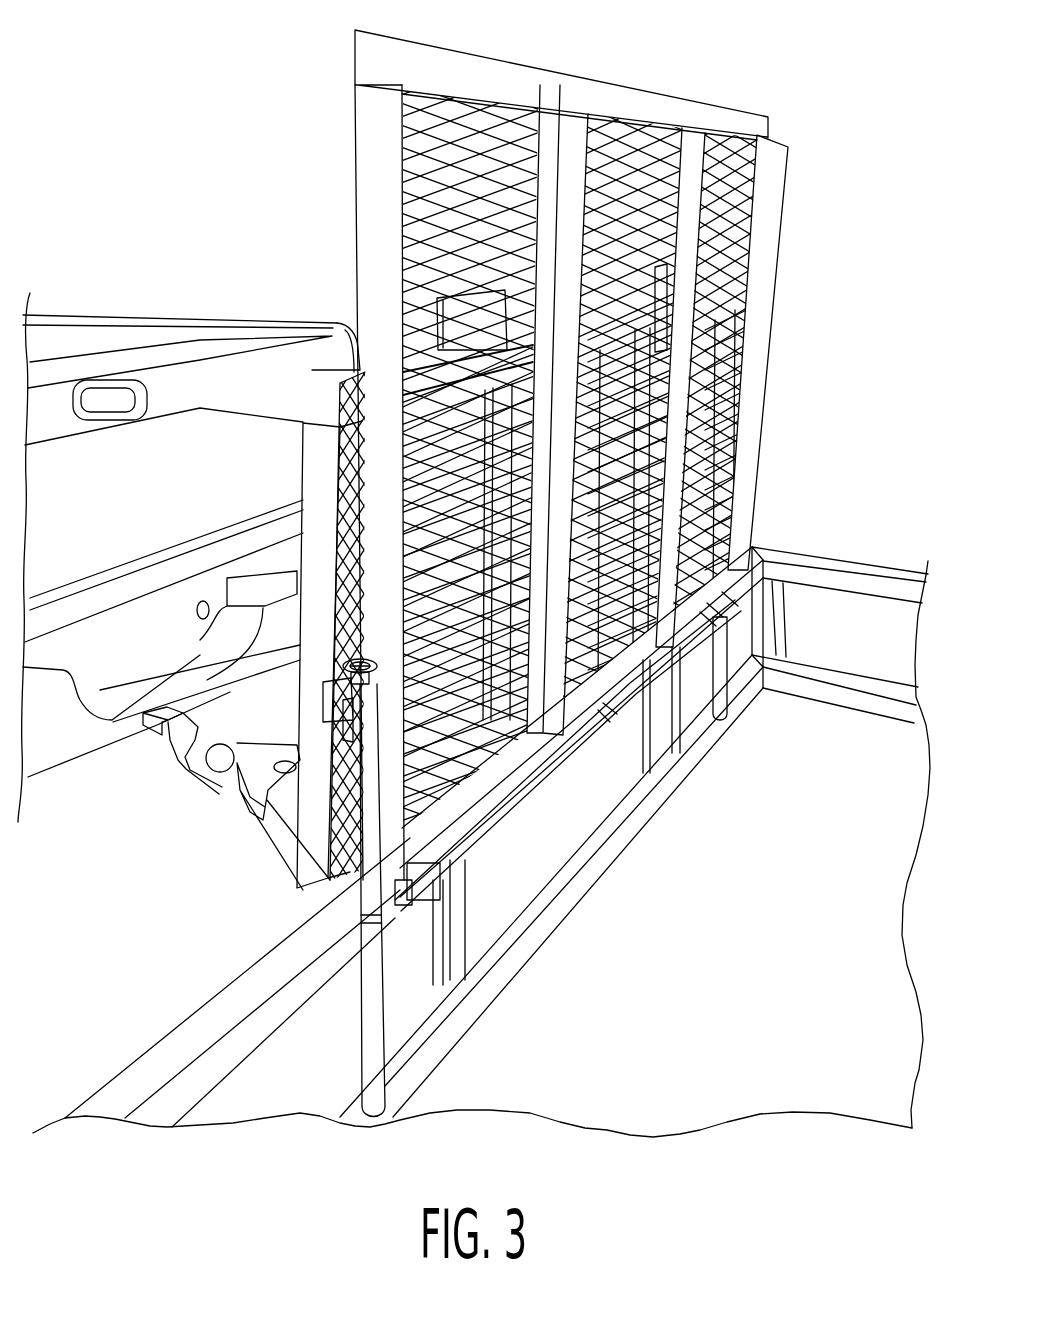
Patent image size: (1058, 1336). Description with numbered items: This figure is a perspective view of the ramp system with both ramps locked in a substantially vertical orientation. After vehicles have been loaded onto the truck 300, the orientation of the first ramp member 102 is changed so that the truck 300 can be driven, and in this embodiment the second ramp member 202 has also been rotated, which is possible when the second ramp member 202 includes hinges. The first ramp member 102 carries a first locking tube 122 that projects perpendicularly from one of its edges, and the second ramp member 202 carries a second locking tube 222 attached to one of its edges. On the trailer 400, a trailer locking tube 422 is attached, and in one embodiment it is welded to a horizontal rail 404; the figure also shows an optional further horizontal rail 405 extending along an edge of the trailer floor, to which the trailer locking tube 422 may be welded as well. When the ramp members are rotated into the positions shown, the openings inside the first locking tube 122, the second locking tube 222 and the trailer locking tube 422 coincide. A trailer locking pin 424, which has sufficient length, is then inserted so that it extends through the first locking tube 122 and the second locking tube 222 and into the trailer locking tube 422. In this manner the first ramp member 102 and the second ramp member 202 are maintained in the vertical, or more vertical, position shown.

The truck 300 is at (126, 272).
The first ramp member 102 is at (330, 423).
The second ramp member 202 is at (667, 93).
The trailer 400 is at (835, 527).
The horizontal rail 404 is at (125, 1082).
The further horizontal rail 405 is at (585, 853).
The trailer locking tube 422 is at (373, 1027).
The trailer locking pin 424 is at (190, 772).
The first locking tube 122 is at (360, 710).
The second locking tube 222 is at (372, 895).